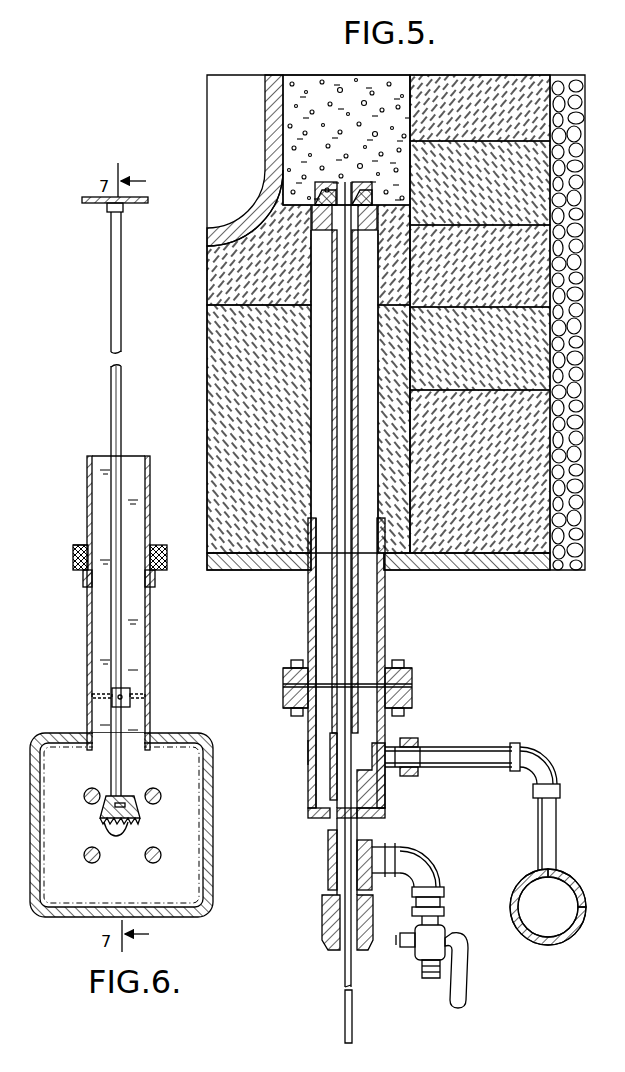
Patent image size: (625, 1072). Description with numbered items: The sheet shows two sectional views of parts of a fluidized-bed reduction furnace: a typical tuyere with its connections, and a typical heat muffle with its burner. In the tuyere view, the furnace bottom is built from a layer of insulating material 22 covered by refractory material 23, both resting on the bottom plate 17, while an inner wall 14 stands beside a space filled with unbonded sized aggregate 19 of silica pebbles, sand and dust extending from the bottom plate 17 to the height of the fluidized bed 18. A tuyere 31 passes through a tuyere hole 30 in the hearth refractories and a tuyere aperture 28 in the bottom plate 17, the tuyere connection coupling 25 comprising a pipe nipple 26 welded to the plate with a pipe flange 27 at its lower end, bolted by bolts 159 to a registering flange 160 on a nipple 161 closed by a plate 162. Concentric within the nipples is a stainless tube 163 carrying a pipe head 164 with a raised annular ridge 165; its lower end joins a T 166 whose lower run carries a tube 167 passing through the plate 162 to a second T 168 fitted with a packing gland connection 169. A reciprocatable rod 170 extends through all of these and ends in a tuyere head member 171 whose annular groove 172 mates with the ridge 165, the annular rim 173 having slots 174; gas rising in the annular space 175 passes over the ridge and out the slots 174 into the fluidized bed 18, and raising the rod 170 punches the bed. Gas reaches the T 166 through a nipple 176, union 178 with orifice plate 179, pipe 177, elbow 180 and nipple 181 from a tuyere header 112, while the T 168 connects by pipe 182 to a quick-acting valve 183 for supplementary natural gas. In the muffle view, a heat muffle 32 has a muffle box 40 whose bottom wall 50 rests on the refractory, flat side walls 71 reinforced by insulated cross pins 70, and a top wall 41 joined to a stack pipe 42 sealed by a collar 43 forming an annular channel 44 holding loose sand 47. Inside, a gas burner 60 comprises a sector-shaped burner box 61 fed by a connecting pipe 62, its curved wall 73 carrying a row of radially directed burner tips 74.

In FIG. 5, the inner wall 14 is at (485, 84).
In FIG. 5, the bottom plate 17 is at (259, 565).
In FIG. 5, the fluidized bed 18 is at (346, 126).
In FIG. 5, the unbonded sized aggregate 19 is at (586, 307).
In FIG. 5, the insulating material 22 is at (216, 406).
In FIG. 5, the refractory material 23 is at (218, 273).
In FIG. 5, the tuyere connection coupling 25 is at (387, 626).
In FIG. 5, the pipe nipple 26 is at (311, 643).
In FIG. 5, the pipe flange 27 is at (413, 678).
In FIG. 5, the tuyere aperture 28 is at (401, 567).
In FIG. 5, the tuyere hole 30 is at (331, 472).
In FIG. 5, the tuyere 31 is at (372, 180).
In FIG. 5, the heat muffle 32 is at (289, 128).
In FIG. 6, the heat muffle 32 is at (60, 734).
In FIG. 6, the muffle box 40 is at (186, 839).
In FIG. 6, the top wall 41 is at (185, 736).
In FIG. 6, the pipe 42 is at (151, 641).
In FIG. 6, the collar 43 is at (73, 564).
In FIG. 6, the annular channel 44 is at (79, 575).
In FIG. 6, the loose sand 47 is at (84, 547).
In FIG. 6, the bottom wall 50 is at (181, 918).
In FIG. 6, the gas burner 60 is at (111, 766).
In FIG. 6, the burner box 61 is at (139, 813).
In FIG. 6, the connecting pipe 62 is at (116, 634).
In FIG. 6, the insulated cross pins 70 is at (84, 797).
In FIG. 6, the side walls 71 is at (197, 774).
In FIG. 6, the curved wall 73 is at (104, 822).
In FIG. 6, the burner tips 74 is at (120, 826).
In FIG. 5, the tuyere header 112 is at (548, 946).
In FIG. 5, the bolts 159 is at (296, 713).
In FIG. 5, the registering flange 160 is at (413, 699).
In FIG. 5, the nipple 161 is at (310, 753).
In FIG. 5, the plate 162 is at (323, 812).
In FIG. 5, the tube 163 is at (340, 411).
In FIG. 5, the pipe head 164 is at (310, 208).
In FIG. 5, the raised annular ridge 165 is at (366, 197).
In FIG. 5, the T 166 is at (330, 769).
In FIG. 5, the tube 167 is at (336, 797).
In FIG. 5, the T 168 is at (327, 852).
In FIG. 5, the packing gland connection 169 is at (322, 928).
In FIG. 5, the rod 170 is at (344, 292).
In FIG. 5, the tuyere head member 171 is at (333, 190).
In FIG. 5, the annular groove 172 is at (358, 184).
In FIG. 5, the annular rim 173 is at (323, 198).
In FIG. 5, the slots 174 is at (326, 204).
In FIG. 5, the annular space 175 is at (338, 352).
In FIG. 5, the nipple 176 is at (388, 770).
In FIG. 5, the pipe 177 is at (480, 747).
In FIG. 5, the union 178 is at (419, 740).
In FIG. 5, the orifice plate 179 is at (420, 773).
In FIG. 5, the elbow 180 is at (546, 757).
In FIG. 5, the nipple 181 is at (540, 834).
In FIG. 5, the pipe 182 is at (396, 851).
In FIG. 5, the quick-acting valve 183 is at (421, 950).